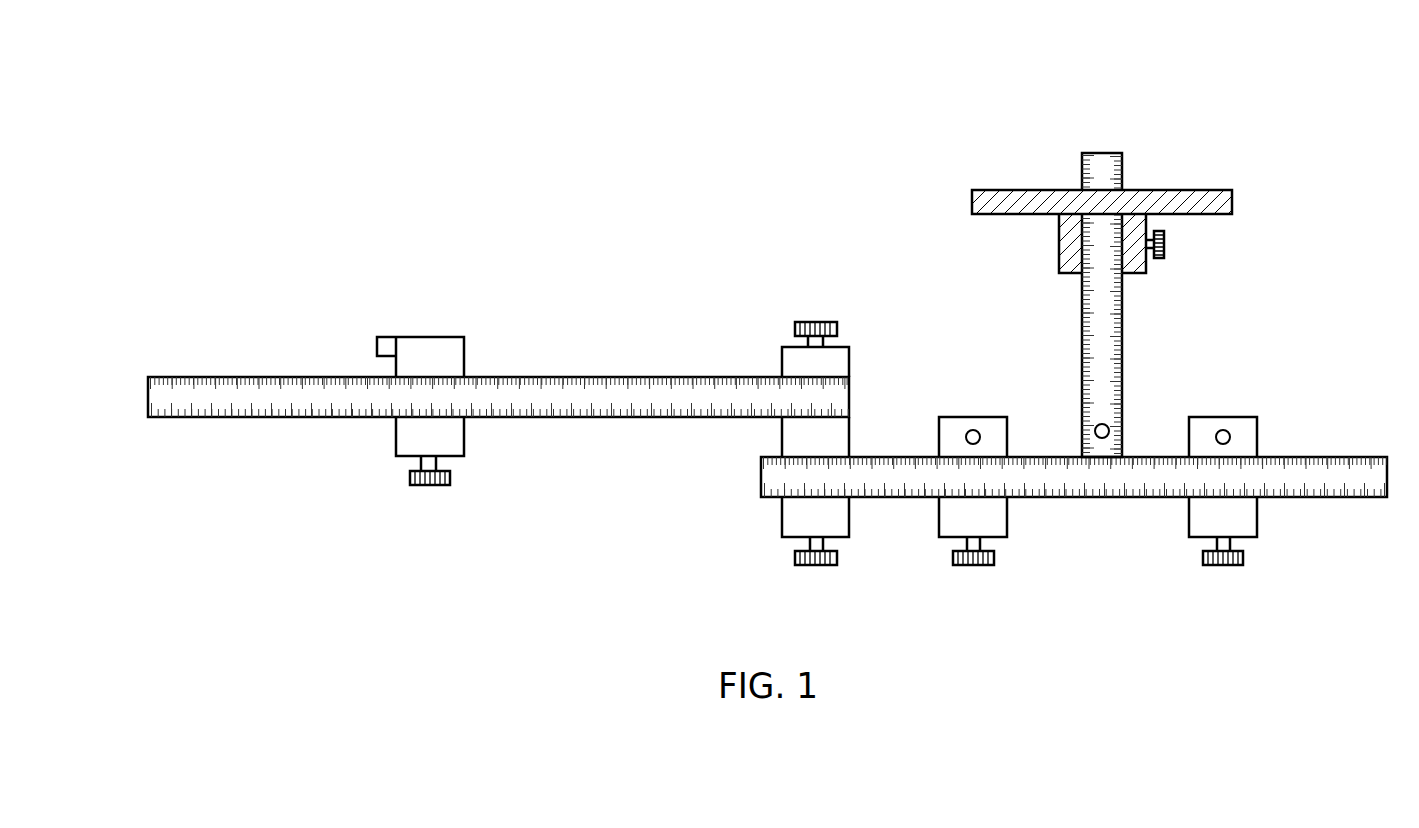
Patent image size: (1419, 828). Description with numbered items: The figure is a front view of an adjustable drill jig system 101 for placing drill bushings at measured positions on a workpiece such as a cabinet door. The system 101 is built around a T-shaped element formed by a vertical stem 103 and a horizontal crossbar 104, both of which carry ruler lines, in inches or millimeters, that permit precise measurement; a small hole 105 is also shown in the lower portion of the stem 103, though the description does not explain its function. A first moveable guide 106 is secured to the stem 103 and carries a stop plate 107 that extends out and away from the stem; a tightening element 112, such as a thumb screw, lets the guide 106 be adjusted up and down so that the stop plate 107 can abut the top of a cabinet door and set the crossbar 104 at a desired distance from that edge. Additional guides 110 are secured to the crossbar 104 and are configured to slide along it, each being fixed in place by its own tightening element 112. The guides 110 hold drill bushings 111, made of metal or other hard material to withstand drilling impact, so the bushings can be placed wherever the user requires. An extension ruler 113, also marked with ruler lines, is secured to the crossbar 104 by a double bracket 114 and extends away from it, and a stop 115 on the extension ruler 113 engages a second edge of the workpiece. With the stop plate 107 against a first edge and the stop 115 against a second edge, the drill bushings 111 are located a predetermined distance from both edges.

The adjustable drill jig system 101 is at (1220, 88).
The stem 103 is at (1124, 338).
The crossbar 104 is at (1380, 498).
The hole 105 is at (1102, 424).
The first moveable guide 106 is at (1059, 243).
The stop plate 107 is at (1010, 190).
The guides 110 is at (1007, 518).
The drill bushings 111 is at (973, 430).
The tightening element 112 is at (428, 488).
The extension ruler 113 is at (215, 376).
The double bracket 114 is at (782, 435).
The stop 115 is at (425, 337).